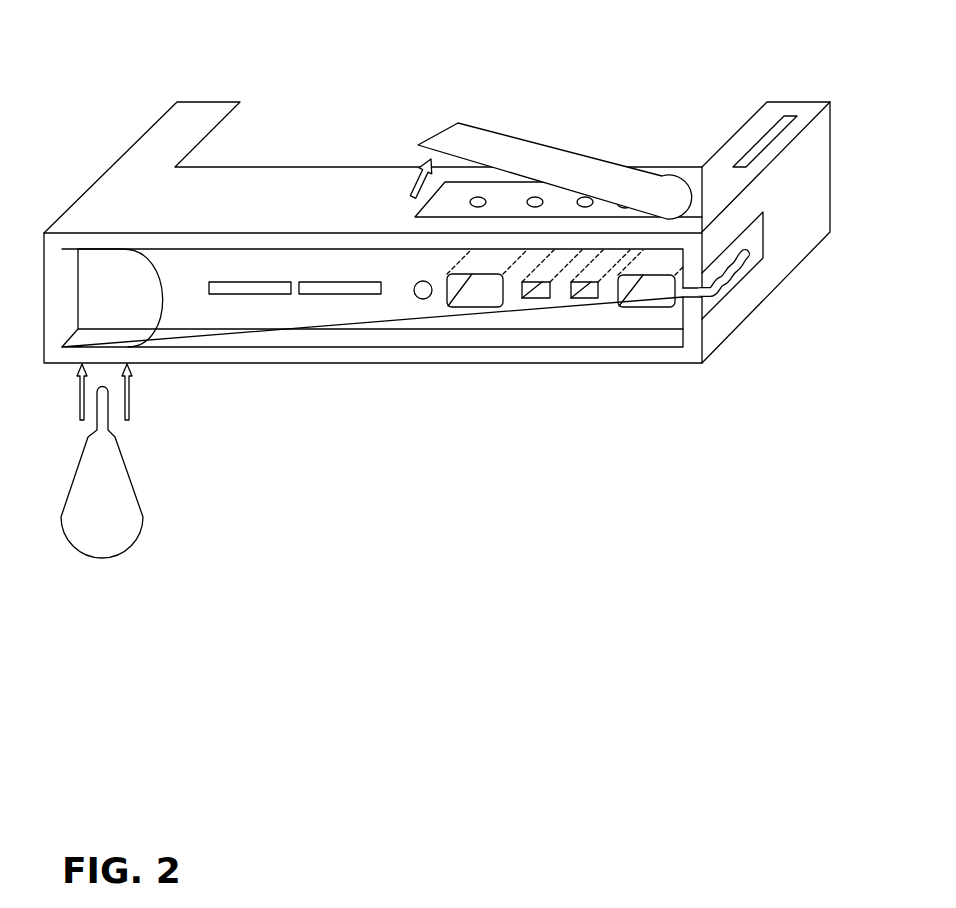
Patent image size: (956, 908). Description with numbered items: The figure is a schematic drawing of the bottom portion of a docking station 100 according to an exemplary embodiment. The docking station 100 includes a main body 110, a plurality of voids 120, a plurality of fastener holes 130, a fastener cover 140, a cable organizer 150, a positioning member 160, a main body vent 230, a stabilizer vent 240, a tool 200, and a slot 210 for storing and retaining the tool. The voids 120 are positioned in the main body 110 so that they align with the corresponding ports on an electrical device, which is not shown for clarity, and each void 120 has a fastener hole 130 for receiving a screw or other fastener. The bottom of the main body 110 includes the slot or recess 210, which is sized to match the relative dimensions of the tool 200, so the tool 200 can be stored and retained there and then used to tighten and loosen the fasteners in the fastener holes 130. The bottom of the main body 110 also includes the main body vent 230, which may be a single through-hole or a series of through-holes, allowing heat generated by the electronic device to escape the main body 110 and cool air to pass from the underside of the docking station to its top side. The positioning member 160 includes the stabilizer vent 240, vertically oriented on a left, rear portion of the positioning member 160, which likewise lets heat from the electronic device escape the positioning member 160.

The docking station 100 is at (110, 147).
The main body 110 is at (667, 365).
The voids 120 is at (652, 307).
The fastener holes 130 is at (556, 188).
The fastener cover 140 is at (627, 168).
The cable organizer 150 is at (715, 305).
The positioning member 160 is at (797, 102).
The tool 200 is at (145, 525).
The slot 210 is at (135, 308).
The main body vent 230 is at (258, 294).
The stabilizer vent 240 is at (757, 140).